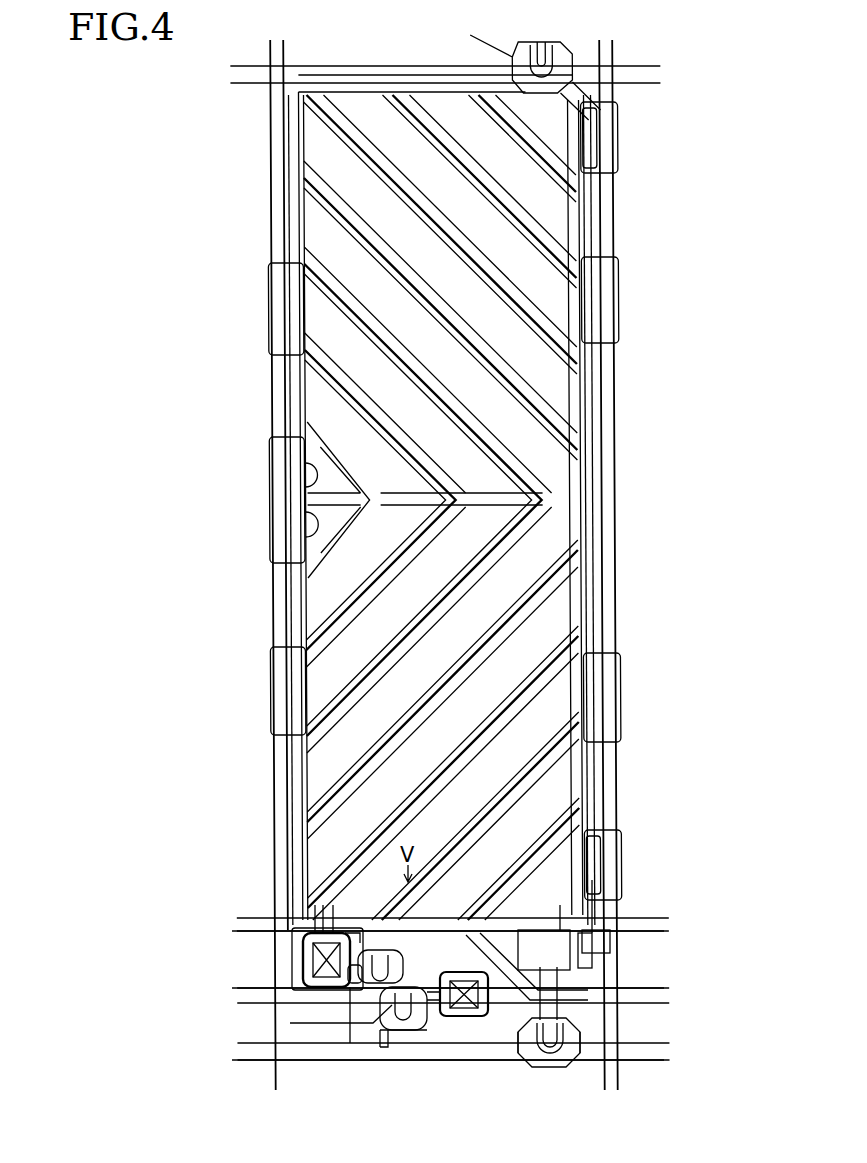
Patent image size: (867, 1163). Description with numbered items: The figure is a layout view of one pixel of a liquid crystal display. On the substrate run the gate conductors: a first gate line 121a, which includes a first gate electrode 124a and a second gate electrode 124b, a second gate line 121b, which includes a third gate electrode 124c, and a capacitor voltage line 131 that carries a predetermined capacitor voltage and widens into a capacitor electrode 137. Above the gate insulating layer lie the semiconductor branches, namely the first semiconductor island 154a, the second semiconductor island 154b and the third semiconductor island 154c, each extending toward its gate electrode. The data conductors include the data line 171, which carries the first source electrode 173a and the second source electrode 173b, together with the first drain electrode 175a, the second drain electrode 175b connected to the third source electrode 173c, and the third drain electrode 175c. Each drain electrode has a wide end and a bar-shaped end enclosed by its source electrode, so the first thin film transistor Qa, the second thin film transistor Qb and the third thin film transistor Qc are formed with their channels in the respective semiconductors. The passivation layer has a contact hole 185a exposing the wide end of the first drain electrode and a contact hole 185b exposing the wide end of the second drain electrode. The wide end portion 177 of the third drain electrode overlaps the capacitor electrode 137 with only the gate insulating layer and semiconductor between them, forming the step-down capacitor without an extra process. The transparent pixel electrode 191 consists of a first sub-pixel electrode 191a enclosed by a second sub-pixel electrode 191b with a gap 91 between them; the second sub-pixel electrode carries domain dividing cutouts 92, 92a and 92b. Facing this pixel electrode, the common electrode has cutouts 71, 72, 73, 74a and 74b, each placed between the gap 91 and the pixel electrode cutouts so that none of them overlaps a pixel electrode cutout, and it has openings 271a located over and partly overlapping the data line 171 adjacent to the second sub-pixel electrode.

The cutout of the common electrode 74a is at (428, 105).
The cutout of the common electrode 74b is at (545, 805).
The data line 171 is at (283, 128).
The cutout of the second sub-pixel electrode 92a is at (620, 118).
The cutout of the second sub-pixel electrode 92b is at (570, 860).
The cutout of the second sub-pixel electrode 92 is at (300, 540).
The opening of the common electrode 271a is at (622, 160).
The cutout of the common electrode 73 is at (340, 215).
The cutout of the common electrode 72 is at (300, 378).
The cutout of the common electrode 71 is at (300, 458).
The gap 91 is at (520, 250).
The pixel electrode 191 is at (703, 372).
The first sub-pixel electrode 191a is at (588, 384).
The second sub-pixel electrode 191b is at (590, 440).
The first source electrode 173a is at (385, 925).
The first gate electrode 124a is at (345, 935).
The first thin film transistor Qa is at (292, 945).
The contact hole 185a is at (300, 960).
The first drain electrode 175a is at (310, 1005).
The first semiconductor island 154a is at (355, 983).
The second gate electrode 124b is at (352, 1045).
The second semiconductor island 154b is at (408, 1032).
The contact hole 185b is at (472, 1018).
The second source electrode 173b is at (384, 1048).
The second thin film transistor Qb is at (402, 1048).
The second drain electrode 175b is at (470, 1020).
The third gate electrode 124c is at (522, 1065).
The third semiconductor island 154c is at (625, 1040).
The third source electrode 173c is at (552, 1070).
The third thin film transistor Qc is at (593, 1074).
The third drain electrode 175c is at (615, 995).
The wide end portion of the third drain electrode 177 is at (600, 905).
The capacitor voltage line 131 is at (648, 931).
The capacitor electrode 137 is at (600, 950).
The first gate line 121a is at (664, 988).
The second gate line 121b is at (655, 1061).